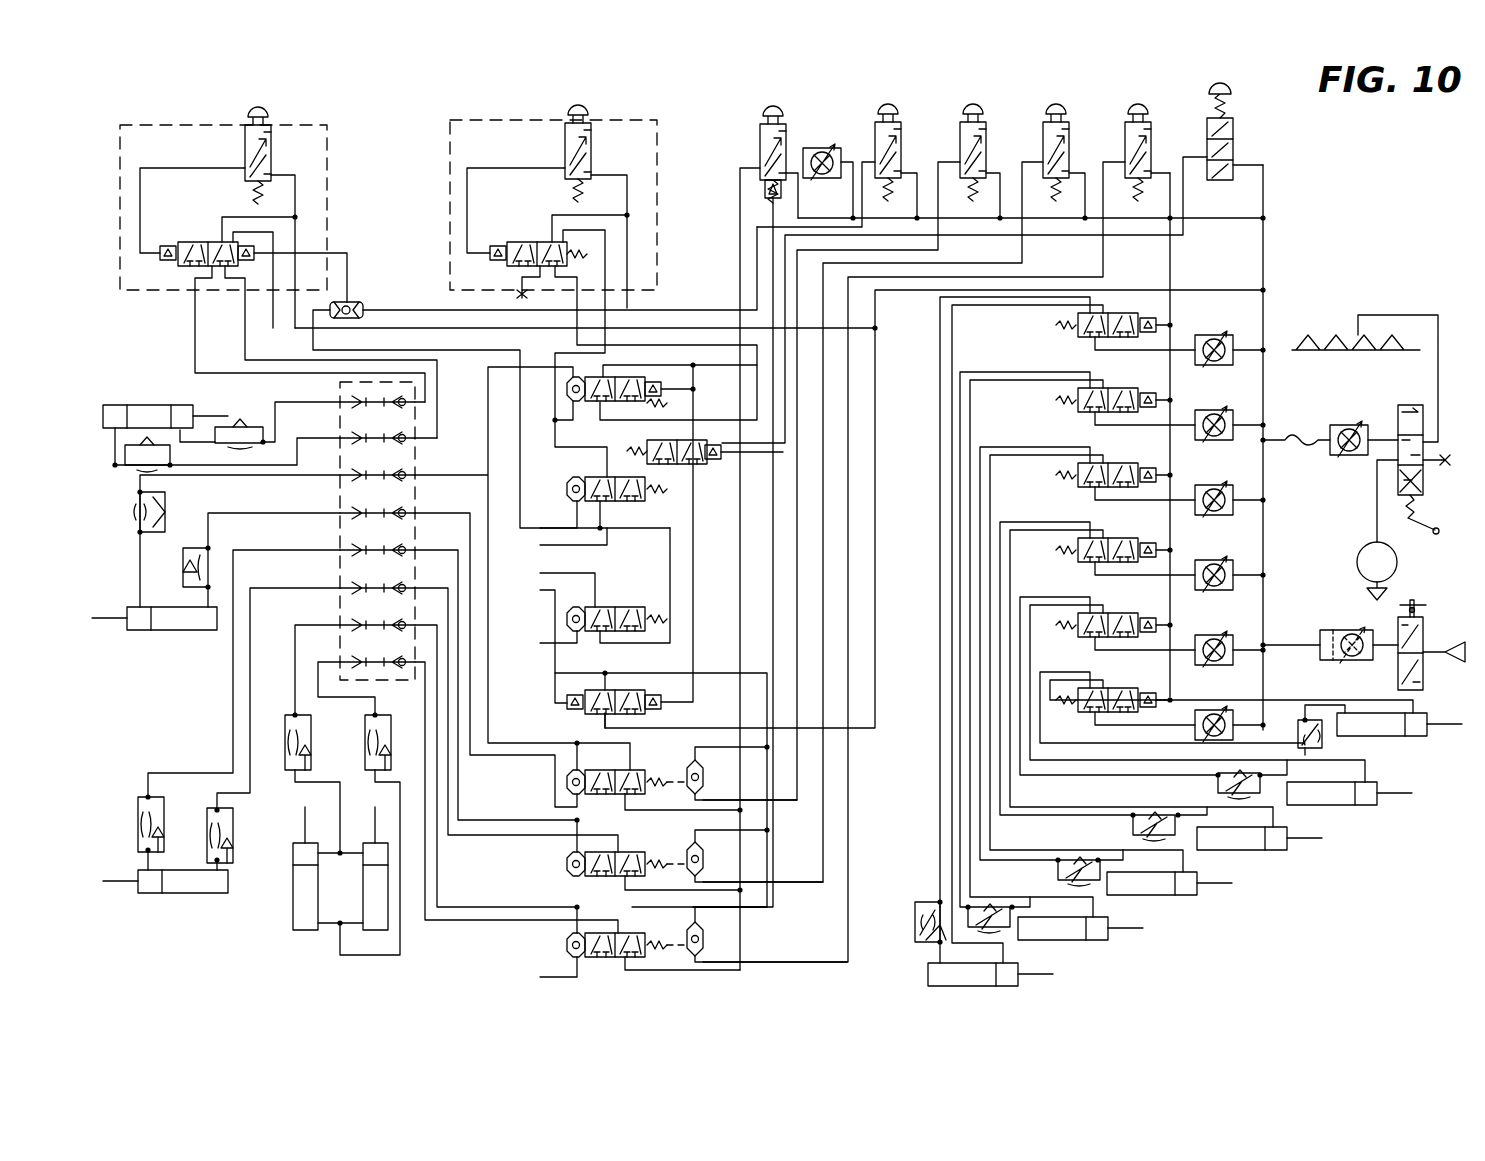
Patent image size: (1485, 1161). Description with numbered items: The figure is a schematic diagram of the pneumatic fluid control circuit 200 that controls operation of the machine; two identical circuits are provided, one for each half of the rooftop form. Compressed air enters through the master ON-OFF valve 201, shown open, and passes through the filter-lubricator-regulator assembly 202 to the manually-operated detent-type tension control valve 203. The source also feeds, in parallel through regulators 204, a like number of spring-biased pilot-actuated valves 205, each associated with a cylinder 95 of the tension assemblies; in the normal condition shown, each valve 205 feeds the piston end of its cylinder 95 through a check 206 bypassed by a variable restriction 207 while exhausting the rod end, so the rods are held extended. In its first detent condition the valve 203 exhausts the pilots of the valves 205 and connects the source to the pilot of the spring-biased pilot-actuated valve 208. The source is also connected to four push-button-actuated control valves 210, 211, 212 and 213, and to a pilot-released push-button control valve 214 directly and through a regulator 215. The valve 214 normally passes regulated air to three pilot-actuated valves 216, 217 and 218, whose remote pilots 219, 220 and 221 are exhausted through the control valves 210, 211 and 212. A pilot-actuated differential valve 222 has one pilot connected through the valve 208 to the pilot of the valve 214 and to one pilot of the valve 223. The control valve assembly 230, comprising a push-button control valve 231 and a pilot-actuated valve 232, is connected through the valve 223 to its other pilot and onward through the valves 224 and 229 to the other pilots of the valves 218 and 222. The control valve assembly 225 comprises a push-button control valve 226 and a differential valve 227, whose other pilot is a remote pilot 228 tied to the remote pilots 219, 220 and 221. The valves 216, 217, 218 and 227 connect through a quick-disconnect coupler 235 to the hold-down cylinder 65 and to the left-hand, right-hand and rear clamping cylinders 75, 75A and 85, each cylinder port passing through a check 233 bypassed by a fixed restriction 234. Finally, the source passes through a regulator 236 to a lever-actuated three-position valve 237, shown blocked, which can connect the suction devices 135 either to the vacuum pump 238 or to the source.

The fluid control circuit 200 is at (1400, 204).
The control valve assembly 225 is at (197, 118).
The spring-biased push-button-actuated control valve 226 is at (245, 146).
The pilot-actuated differential valve 227 is at (208, 242).
The remote pilot 228 is at (356, 303).
The control valve assembly 230 is at (517, 114).
The spring-biased push-button-actuated control valve 231 is at (565, 143).
The spring-biased pilot-actuated valve 232 is at (537, 242).
The pilot-released push-button-actuated control valve 214 is at (760, 134).
The regulator 215 is at (808, 148).
The spring-biased push-button-actuated control valve 213 is at (875, 130).
The spring-biased push-button-actuated control valve 212 is at (960, 132).
The spring-biased push-button-actuated control valve 211 is at (1043, 134).
The spring-biased push-button-actuated control valve 210 is at (1125, 134).
The manually-operated detent-type tension control valve 203 is at (1234, 142).
The spring-biased pilot-actuated valve 223 is at (628, 377).
The spring-biased pilot-actuated valve 208 is at (708, 463).
The spring-biased pilot-actuated valve 224 is at (622, 501).
The spring-biased pilot-actuated valve 229 is at (630, 607).
The pilot-actuated differential valve 222 is at (650, 715).
The spring-biased pilot-actuated valve 218 is at (637, 770).
The remote pilot 221 is at (698, 778).
The spring-biased pilot-actuated valve 217 is at (637, 852).
The remote pilot 220 is at (697, 860).
The remote pilot 219 is at (697, 930).
The spring-biased pilot-actuated valve 216 is at (612, 958).
The quick-disconnect coupler 235 is at (338, 399).
The hold-down cylinder 65 is at (160, 405).
The check 233 is at (165, 512).
The fixed restriction 234 is at (136, 514).
The left-hand clamping cylinder 75 is at (180, 630).
The right-hand clamping cylinder 75A is at (190, 893).
The rear clamping cylinder 85 is at (370, 892).
The spring-biased pilot-actuated valve 205 is at (1112, 640).
The regulator 204 is at (1245, 648).
The suction devices 135 is at (1312, 345).
The regulator 236 is at (1342, 425).
The lever-actuated three-position valve 237 is at (1412, 405).
The vacuum pump 238 is at (1357, 560).
The filter-lubricator-regulator assembly 202 is at (1352, 632).
The master ON-OFF valve 201 is at (1422, 640).
The cylinder 95 is at (1050, 940).
The check 206 is at (935, 940).
The variable restriction 207 is at (912, 918).